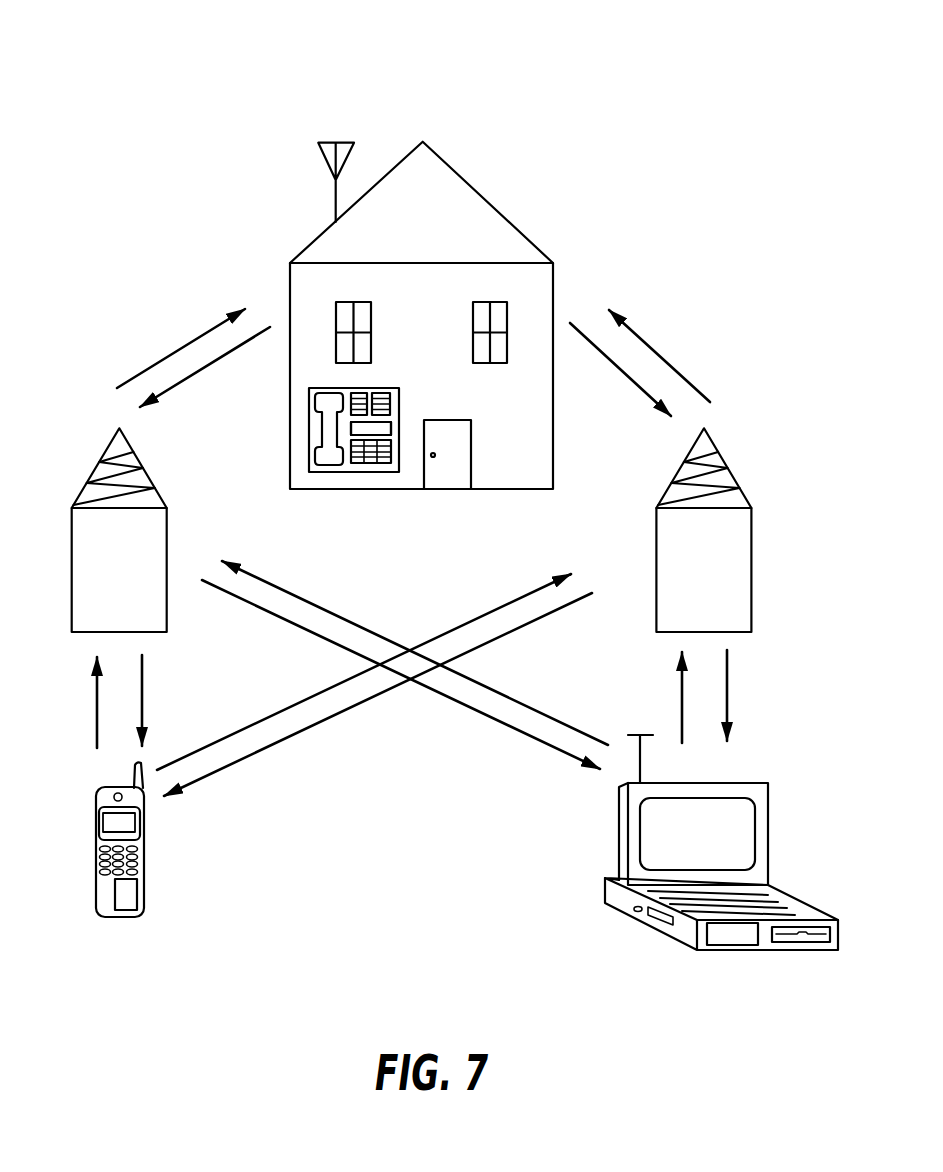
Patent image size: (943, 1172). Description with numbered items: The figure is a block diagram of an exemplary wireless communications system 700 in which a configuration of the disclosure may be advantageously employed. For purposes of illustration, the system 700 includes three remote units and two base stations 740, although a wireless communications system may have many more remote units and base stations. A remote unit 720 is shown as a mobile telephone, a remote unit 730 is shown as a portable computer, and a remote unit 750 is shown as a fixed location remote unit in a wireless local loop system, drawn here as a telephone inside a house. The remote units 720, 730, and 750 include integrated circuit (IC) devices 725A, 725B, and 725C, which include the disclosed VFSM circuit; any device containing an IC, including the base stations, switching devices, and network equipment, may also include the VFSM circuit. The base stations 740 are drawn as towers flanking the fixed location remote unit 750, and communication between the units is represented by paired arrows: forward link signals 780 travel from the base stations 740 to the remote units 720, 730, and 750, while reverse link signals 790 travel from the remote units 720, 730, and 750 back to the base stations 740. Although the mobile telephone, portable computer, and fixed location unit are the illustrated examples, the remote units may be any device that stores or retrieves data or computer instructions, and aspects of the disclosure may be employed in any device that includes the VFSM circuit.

The wireless communications system 700 is at (158, 86).
The remote unit 720 is at (97, 797).
The integrated circuit device 725A is at (128, 902).
The integrated circuit device 725B is at (380, 429).
The integrated circuit device 725C is at (740, 933).
The remote unit 730 is at (749, 782).
The base station 740 is at (98, 467).
The remote unit 750 is at (309, 441).
The forward link signals 780 is at (190, 340).
The reverse link signals 790 is at (192, 383).